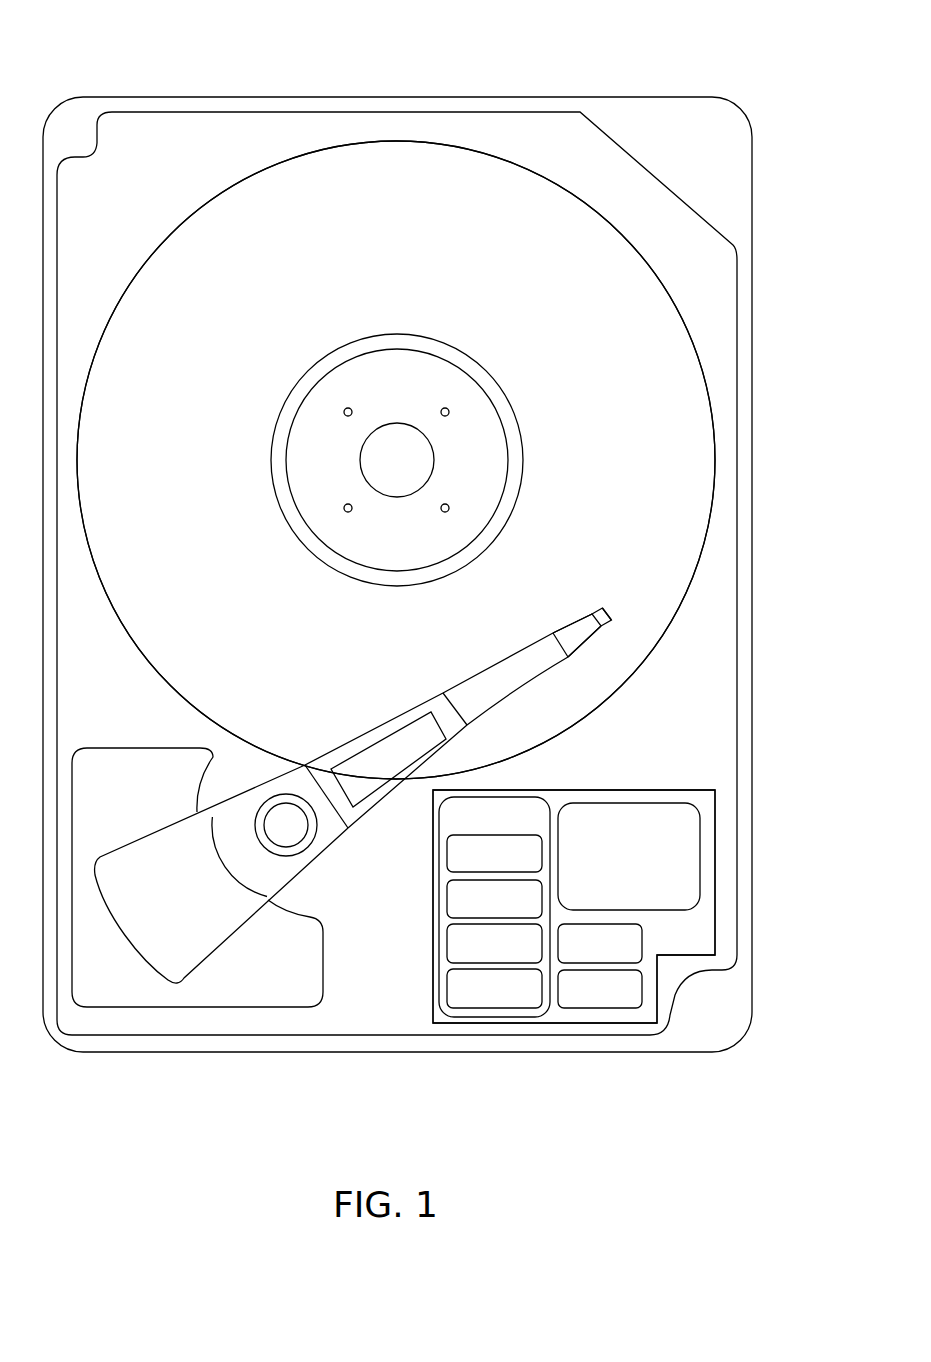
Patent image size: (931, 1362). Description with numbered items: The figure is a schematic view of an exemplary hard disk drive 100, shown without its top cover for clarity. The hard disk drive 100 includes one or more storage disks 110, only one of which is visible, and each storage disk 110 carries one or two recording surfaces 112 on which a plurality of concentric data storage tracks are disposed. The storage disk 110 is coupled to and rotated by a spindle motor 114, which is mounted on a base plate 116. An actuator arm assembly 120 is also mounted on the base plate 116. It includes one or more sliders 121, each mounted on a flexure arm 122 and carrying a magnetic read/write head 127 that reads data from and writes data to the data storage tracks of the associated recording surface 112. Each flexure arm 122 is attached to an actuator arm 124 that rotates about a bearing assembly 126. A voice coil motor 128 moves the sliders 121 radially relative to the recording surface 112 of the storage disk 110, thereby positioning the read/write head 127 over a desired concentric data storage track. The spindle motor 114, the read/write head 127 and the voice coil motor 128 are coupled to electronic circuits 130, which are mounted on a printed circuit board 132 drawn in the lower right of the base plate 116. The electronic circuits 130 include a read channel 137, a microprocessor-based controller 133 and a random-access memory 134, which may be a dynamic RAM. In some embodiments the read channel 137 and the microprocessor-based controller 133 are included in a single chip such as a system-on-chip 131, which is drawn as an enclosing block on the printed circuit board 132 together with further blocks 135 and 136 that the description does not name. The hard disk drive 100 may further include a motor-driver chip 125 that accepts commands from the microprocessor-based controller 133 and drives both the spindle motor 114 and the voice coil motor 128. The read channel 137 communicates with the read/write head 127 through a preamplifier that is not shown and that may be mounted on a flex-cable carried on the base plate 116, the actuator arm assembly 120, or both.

The hard disk drive 100 is at (133, 64).
The storage disk 110 is at (172, 233).
The recording surface 112 is at (205, 444).
The spindle motor 114 is at (490, 398).
The base plate 116 is at (737, 600).
The actuator arm assembly 120 is at (339, 699).
The slider 121 is at (608, 611).
The flexure arm 122 is at (565, 627).
The actuator arm 124 is at (468, 679).
The motor-driver chip 125 is at (620, 956).
The bearing assembly 126 is at (310, 865).
The read/write head 127 is at (600, 586).
The voice coil motor 128 is at (323, 943).
The electronic circuits 130 is at (582, 797).
The system-on-chip 131 is at (514, 831).
The printed circuit board 132 is at (655, 790).
The microprocessor-based controller 133 is at (514, 867).
The random-access memory 134 is at (620, 1001).
The controller 135 is at (649, 869).
The processing module 136 is at (514, 912).
The read channel 137 is at (514, 956).